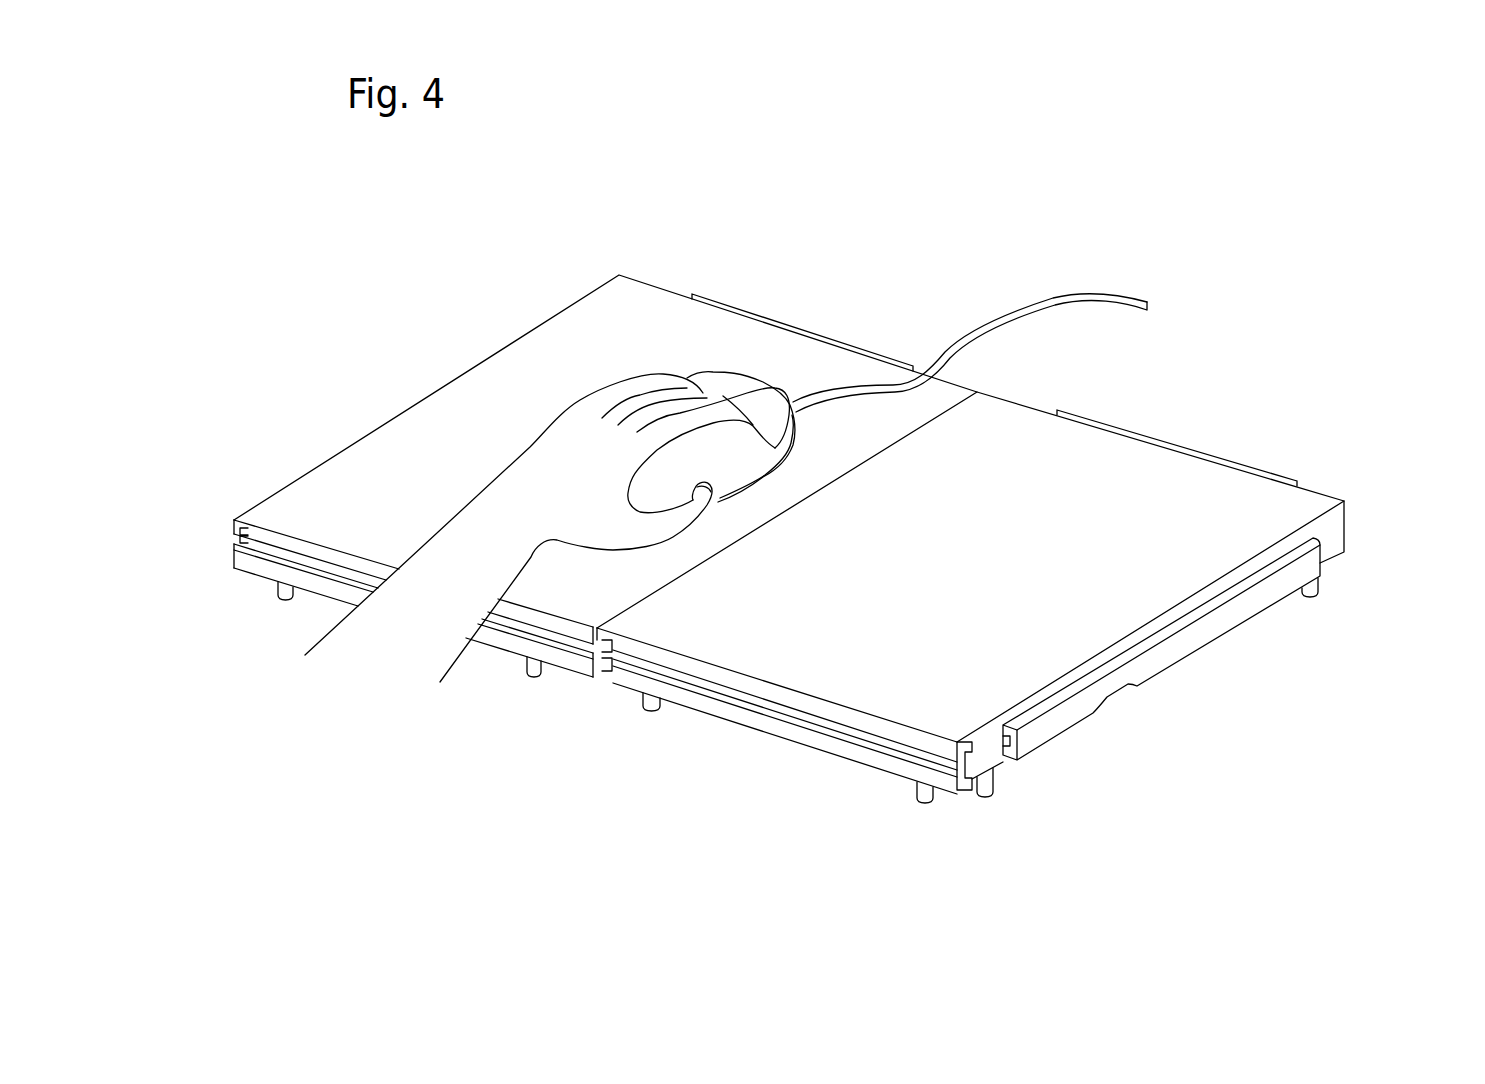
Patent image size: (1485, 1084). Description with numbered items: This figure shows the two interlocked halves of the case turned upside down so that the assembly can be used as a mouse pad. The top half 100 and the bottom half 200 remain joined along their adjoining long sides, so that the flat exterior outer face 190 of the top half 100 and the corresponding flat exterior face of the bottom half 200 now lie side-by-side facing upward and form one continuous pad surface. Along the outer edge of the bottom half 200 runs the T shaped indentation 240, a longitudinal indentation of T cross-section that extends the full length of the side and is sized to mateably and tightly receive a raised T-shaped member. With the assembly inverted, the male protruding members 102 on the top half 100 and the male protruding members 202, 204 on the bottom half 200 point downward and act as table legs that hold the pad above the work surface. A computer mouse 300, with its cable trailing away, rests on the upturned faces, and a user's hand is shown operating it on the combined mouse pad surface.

The top half 100 is at (486, 277).
The flat exterior outer face 190 is at (427, 423).
The male protruding member 102 is at (279, 597).
The bottom half 200 is at (1240, 357).
The T shaped indentation 240 is at (1247, 490).
The male protruding member 202 is at (643, 706).
The male protruding member 204 is at (1319, 594).
The computer mouse 300 is at (777, 383).